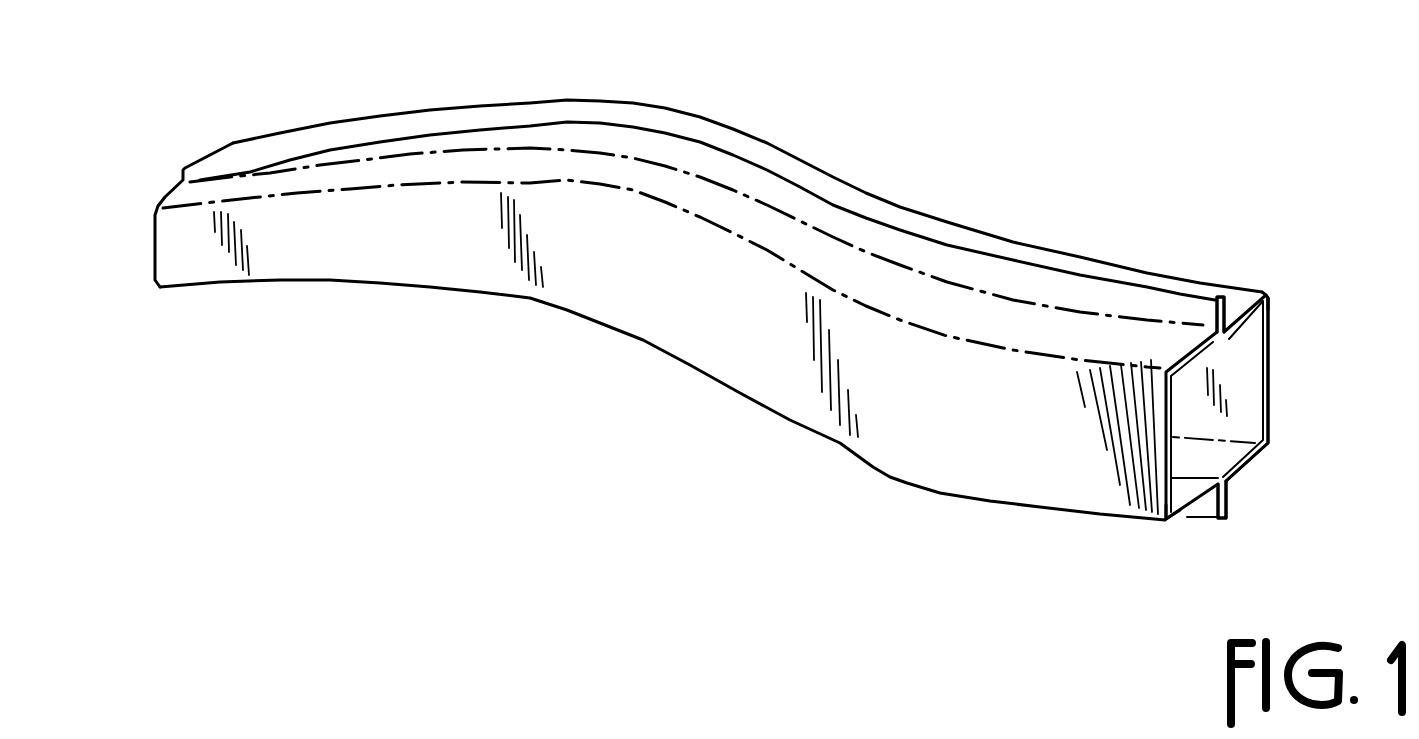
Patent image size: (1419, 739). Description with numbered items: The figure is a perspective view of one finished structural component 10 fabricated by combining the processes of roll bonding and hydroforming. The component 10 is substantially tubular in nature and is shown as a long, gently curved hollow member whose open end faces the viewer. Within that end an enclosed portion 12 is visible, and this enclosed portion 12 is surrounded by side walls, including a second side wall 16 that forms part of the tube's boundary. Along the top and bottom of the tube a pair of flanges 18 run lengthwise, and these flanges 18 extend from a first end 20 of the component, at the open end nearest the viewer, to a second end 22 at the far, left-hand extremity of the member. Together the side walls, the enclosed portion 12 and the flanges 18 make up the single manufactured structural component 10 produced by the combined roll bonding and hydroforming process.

The structural component 10 is at (992, 462).
The enclosed portion 12 is at (1243, 352).
The second side wall 16 is at (1270, 295).
The flanges 18 is at (1130, 286).
The first end 20 is at (1273, 433).
The second end 22 is at (218, 151).